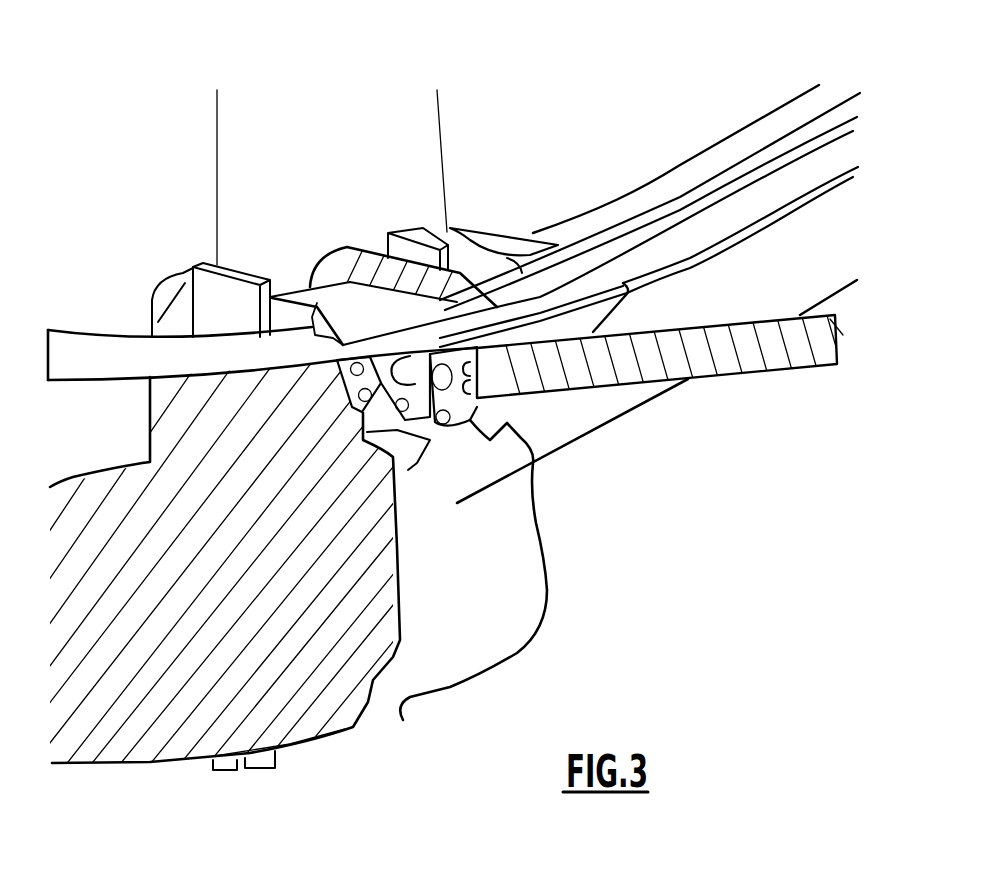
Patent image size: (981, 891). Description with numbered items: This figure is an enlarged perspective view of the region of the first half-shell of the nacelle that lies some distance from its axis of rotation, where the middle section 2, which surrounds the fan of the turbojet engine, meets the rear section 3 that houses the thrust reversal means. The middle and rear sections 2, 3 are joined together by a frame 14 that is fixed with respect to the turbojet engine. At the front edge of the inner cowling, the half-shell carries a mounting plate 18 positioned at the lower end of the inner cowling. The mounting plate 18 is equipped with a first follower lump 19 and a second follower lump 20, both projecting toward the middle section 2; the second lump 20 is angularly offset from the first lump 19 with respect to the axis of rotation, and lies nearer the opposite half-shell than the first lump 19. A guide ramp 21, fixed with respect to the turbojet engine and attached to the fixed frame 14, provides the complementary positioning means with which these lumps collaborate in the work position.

The middle section 2 is at (108, 778).
The rear section 3 is at (728, 124).
The frame 14 is at (180, 357).
The mounting plate 18 is at (590, 320).
The first follower lump 19 is at (470, 420).
The second follower lump 20 is at (420, 390).
The guide ramp 21 is at (710, 348).